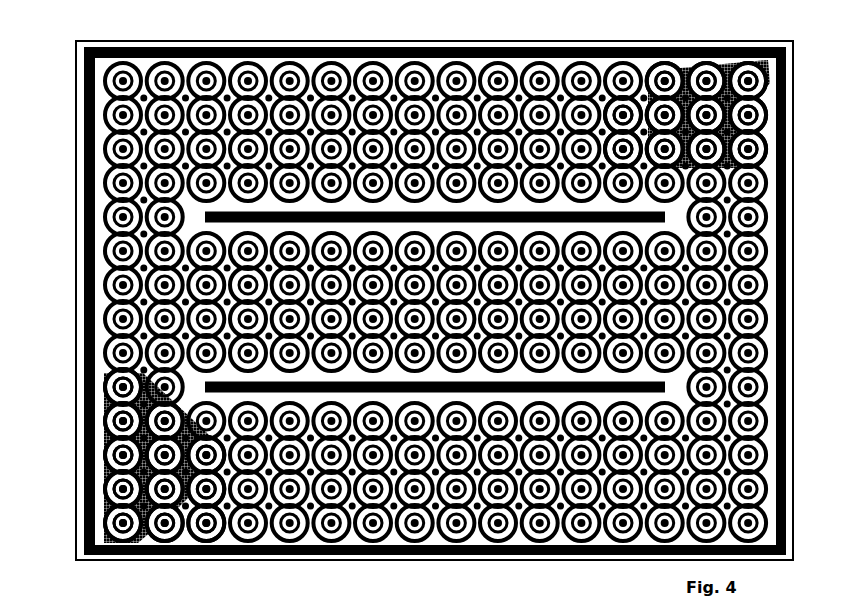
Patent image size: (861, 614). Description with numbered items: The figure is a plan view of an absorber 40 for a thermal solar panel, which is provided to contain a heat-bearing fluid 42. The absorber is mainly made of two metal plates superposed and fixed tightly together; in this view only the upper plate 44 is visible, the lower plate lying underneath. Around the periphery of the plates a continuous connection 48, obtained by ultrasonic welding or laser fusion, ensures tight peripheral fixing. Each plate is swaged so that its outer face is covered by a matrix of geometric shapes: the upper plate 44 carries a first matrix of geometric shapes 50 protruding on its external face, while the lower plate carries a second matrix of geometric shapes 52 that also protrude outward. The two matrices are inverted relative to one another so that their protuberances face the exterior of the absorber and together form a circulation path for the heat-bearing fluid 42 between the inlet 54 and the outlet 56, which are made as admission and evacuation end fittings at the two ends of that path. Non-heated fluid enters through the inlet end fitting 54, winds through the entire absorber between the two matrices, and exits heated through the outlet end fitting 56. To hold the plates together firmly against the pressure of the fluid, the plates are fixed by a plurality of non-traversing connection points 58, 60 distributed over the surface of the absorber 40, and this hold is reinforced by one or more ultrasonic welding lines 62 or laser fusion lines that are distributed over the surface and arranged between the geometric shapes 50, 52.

The absorber 40 is at (67, 98).
The heat-bearing fluid 42 is at (700, 60).
The upper plate 44 is at (92, 192).
The continuous connection 48 is at (73, 355).
The first matrix of geometric shapes 50 is at (448, 533).
The second matrix of geometric shapes 52 is at (550, 553).
The inlet 54 is at (100, 526).
The outlet 56 is at (758, 58).
The connection points 58 is at (183, 533).
The connection points 60 is at (302, 504).
The ultrasonic welding lines 62 is at (652, 380).